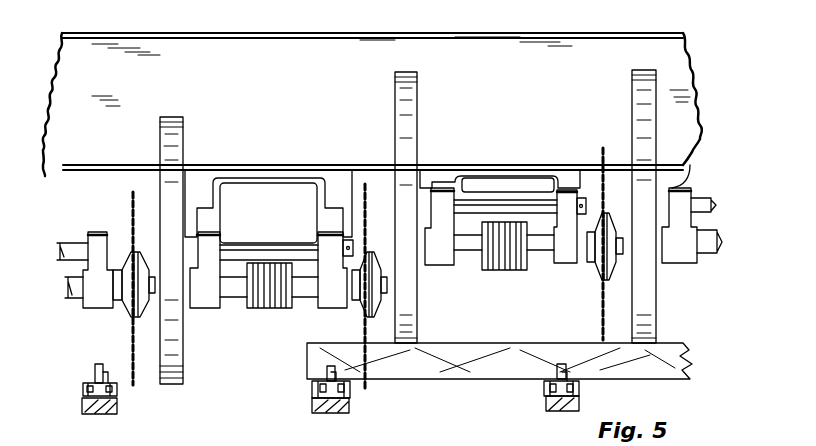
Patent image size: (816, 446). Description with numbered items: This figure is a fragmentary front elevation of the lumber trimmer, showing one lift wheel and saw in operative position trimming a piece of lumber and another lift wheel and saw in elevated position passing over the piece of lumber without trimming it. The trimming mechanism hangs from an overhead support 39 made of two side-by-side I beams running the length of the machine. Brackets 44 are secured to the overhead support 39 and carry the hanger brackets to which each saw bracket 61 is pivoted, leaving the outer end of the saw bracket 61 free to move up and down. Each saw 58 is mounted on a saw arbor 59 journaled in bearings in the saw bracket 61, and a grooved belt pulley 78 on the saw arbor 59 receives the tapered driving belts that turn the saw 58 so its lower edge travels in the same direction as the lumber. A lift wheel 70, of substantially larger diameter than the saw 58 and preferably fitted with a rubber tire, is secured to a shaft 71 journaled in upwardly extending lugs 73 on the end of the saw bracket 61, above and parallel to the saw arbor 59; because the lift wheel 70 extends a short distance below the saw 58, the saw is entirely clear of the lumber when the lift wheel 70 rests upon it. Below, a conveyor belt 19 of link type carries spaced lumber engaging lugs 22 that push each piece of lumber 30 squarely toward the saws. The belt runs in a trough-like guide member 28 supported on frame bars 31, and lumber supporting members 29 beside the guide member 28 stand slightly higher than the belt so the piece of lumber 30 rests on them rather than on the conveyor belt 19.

The overhead support 39 is at (313, 47).
The lift wheel 70 is at (175, 118).
The piece of lumber 30 is at (692, 362).
The saw 58 is at (131, 196).
The bracket 44 is at (275, 175).
The saw bracket 61 is at (88, 306).
The shaft 71 is at (70, 243).
The upwardly extending lugs 73 is at (323, 238).
The grooved belt pulley 78 is at (269, 310).
The saw arbor 59 is at (386, 290).
The lumber engaging lugs 22 is at (99, 364).
The conveyor belt 19 is at (90, 385).
The lumber supporting member 29 is at (85, 387).
The guide member 28 is at (118, 392).
The frame bar 31 is at (117, 407).